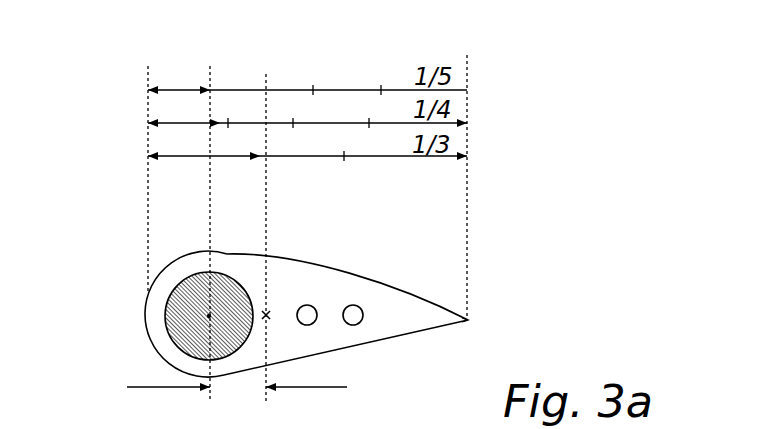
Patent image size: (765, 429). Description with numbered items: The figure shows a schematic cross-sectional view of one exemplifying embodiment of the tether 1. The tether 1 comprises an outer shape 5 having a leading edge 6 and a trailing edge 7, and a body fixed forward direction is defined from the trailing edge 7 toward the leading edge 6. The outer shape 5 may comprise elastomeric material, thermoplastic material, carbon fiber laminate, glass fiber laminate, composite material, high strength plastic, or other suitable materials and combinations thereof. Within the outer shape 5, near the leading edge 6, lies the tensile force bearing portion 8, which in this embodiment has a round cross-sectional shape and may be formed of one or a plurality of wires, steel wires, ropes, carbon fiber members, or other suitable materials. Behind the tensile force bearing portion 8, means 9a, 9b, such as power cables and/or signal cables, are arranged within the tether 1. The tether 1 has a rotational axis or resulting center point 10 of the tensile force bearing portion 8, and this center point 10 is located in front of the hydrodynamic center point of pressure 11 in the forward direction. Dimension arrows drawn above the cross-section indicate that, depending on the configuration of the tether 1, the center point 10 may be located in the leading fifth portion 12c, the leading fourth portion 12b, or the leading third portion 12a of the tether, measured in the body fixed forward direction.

The tether 1 is at (150, 232).
The outer shape 5 is at (350, 355).
The leading edge 6 is at (150, 337).
The trailing edge 7 is at (479, 322).
The tensile force bearing portion 8 is at (222, 293).
The means 9a is at (310, 306).
The means 9b is at (356, 306).
The center point of the tensile force bearing portion 10 is at (205, 311).
The hydrodynamic center point of pressure 11 is at (267, 311).
The leading third portion 12a is at (178, 156).
The leading fourth portion 12b is at (175, 123).
The leading fifth portion 12c is at (175, 90).